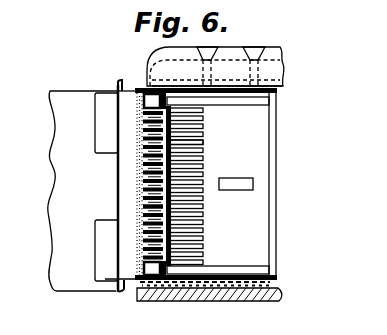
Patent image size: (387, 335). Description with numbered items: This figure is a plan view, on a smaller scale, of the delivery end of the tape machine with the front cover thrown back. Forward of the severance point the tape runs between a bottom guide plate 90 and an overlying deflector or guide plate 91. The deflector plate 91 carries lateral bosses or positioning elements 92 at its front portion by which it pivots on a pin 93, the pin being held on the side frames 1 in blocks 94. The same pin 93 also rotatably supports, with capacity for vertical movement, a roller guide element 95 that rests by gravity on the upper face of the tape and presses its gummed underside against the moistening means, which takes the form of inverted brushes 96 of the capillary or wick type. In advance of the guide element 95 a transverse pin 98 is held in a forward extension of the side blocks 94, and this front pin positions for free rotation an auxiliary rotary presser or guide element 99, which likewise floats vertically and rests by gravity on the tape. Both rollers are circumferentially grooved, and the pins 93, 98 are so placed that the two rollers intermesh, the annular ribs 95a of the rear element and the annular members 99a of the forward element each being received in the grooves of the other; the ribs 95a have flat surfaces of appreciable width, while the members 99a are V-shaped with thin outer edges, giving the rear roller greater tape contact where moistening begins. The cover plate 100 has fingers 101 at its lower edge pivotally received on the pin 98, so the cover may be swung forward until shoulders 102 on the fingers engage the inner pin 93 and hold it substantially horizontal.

The side frames 1 is at (158, 54).
The bottom guide plate 90 is at (277, 232).
The deflector or guide plate 91 is at (257, 149).
The lateral bosses or positioning elements 92 is at (211, 100).
The pin 93 is at (194, 290).
The blocks 94 is at (232, 86).
The roller guide means or element 95 is at (200, 170).
The annular ribs 95a is at (203, 142).
The inverted brushes 96 is at (134, 107).
The transverse pin 98 is at (147, 87).
The rotary presser or guide element 99 is at (140, 171).
The annular members 99a is at (140, 199).
The cover plate 100 is at (65, 137).
The fingers 101 is at (122, 84).
The shoulders 102 is at (216, 194).